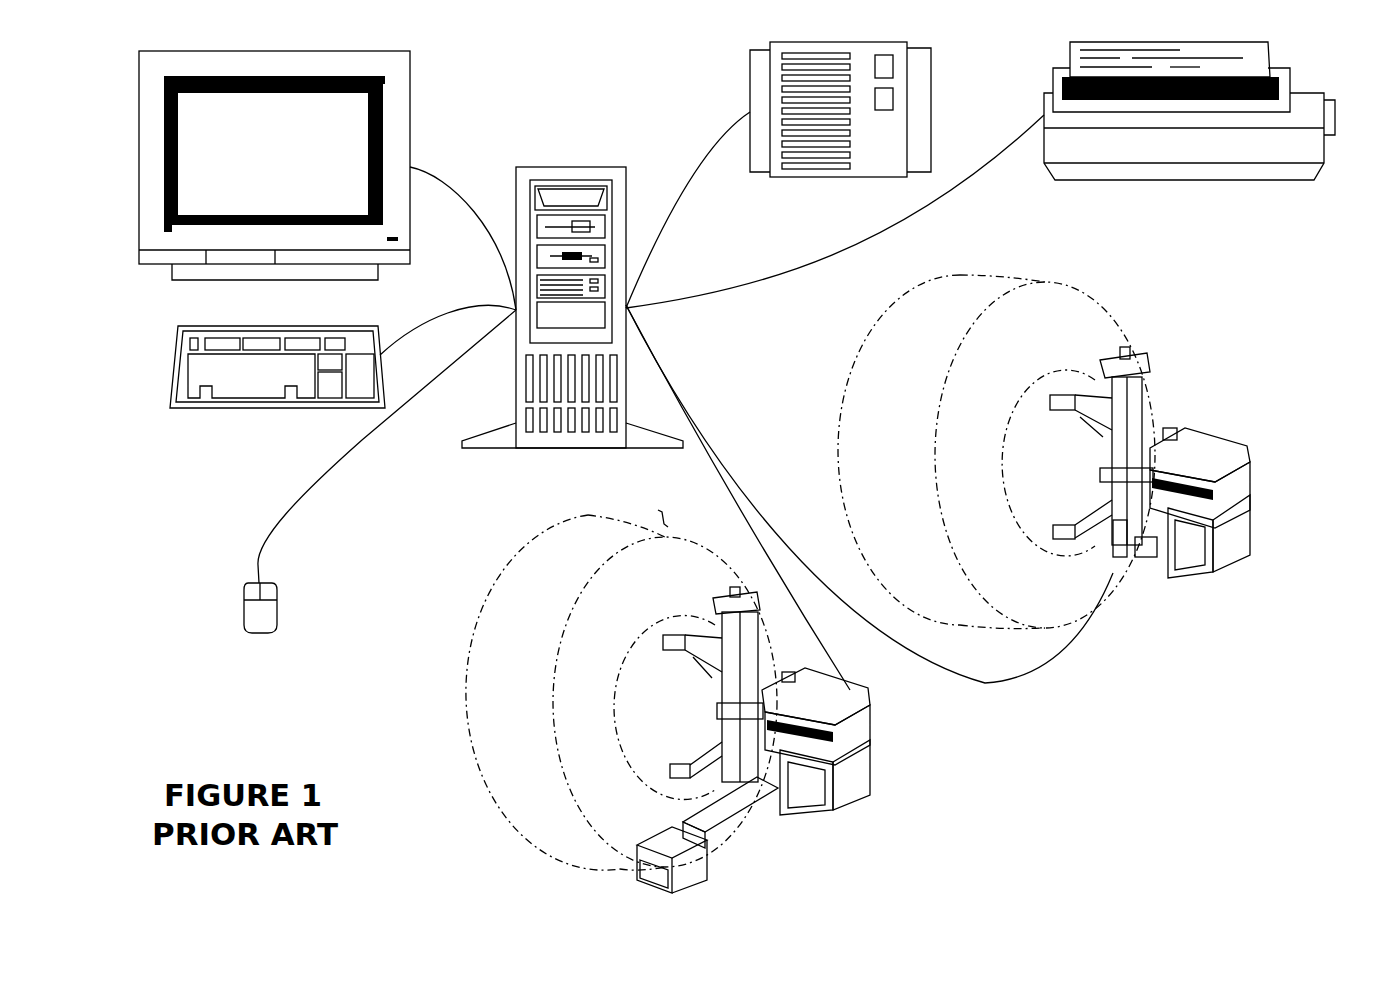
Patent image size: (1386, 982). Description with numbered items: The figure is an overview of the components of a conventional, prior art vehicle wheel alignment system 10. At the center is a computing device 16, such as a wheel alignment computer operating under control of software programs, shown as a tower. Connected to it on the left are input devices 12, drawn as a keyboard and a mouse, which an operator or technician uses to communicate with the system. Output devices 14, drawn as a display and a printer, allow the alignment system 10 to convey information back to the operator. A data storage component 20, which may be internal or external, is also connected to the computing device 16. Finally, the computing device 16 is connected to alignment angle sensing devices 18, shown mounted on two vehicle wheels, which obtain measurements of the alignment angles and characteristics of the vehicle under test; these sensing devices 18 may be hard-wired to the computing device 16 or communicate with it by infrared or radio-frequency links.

The vehicle wheel alignment system 10 is at (590, 90).
The input device 12 is at (277, 495).
The output device 14 is at (737, 174).
The computing device 16 is at (572, 322).
The alignment angle sensing device 18 is at (868, 760).
The data storage component 20 is at (840, 123).